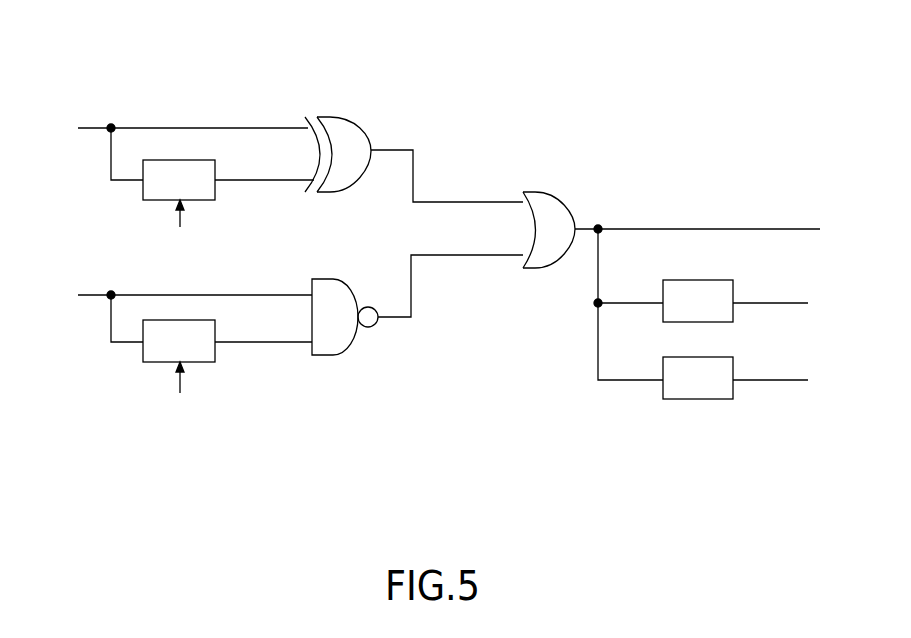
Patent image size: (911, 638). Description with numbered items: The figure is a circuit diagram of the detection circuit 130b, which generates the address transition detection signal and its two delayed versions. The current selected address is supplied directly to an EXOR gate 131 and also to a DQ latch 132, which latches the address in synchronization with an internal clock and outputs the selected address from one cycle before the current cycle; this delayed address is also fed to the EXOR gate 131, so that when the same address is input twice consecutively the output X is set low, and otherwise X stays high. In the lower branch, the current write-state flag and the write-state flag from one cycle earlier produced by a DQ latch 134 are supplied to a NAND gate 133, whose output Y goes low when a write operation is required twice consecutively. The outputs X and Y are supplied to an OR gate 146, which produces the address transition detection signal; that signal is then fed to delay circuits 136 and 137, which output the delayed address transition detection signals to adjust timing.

The detection circuit 130b is at (760, 40).
The EXOR gate 131 is at (340, 117).
The DQ latch 132 is at (216, 200).
The NAND gate 133 is at (340, 279).
The DQ latch 134 is at (216, 362).
The OR gate 146 is at (552, 192).
The delay circuit 136 is at (733, 318).
The delay circuit 137 is at (733, 395).